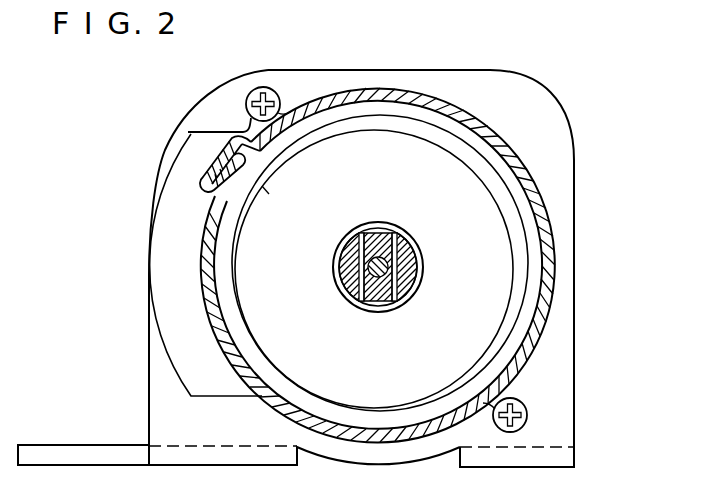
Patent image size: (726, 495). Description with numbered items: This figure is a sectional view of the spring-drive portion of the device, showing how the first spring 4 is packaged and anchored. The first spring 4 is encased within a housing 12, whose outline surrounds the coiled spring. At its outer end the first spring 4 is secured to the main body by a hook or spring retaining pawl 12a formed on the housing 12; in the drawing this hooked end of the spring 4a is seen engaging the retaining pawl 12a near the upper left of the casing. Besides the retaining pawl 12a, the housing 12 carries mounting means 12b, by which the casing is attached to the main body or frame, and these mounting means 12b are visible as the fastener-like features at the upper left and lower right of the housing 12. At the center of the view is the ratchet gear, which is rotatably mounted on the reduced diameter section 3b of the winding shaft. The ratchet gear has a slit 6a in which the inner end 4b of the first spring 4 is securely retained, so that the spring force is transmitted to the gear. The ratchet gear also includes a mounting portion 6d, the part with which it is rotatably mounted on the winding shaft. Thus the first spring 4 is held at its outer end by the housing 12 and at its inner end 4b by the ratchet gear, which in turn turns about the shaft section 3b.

The housing 12 is at (549, 251).
The spring retaining pawl 12a is at (224, 140).
The mounting means 12b is at (527, 410).
The first spring 4 is at (536, 187).
The hooked end of ring 4a is at (207, 179).
The inner end 4b is at (398, 289).
The reduced diameter section 3b is at (378, 257).
The slit 6a is at (389, 265).
The mounting portion 6d is at (375, 298).